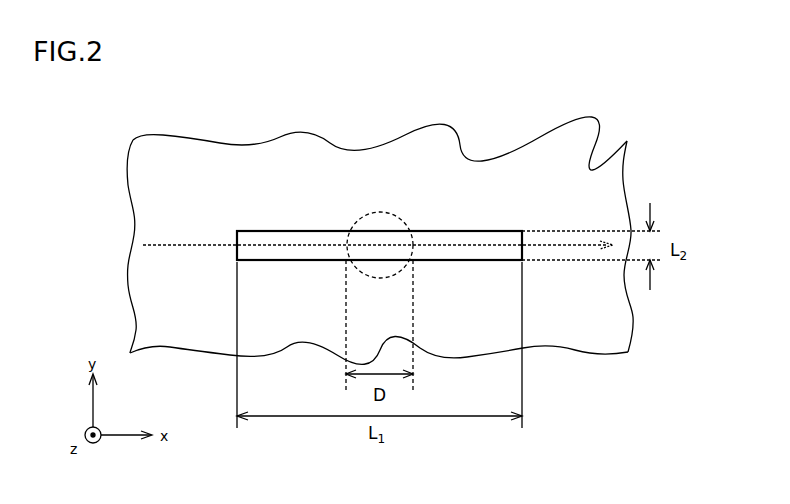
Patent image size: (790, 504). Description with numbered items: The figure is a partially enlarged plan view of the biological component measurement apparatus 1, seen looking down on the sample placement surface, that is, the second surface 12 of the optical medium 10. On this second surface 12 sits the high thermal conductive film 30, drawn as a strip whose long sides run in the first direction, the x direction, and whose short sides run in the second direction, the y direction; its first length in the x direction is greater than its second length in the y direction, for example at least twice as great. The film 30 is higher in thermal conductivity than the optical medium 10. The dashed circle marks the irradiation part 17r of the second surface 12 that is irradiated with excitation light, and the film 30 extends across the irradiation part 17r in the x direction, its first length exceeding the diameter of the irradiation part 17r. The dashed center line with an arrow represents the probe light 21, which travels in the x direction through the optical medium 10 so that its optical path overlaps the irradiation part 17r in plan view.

The biological component measurement apparatus 1 is at (641, 116).
The optical medium 10 is at (170, 348).
The second surface 12 is at (585, 326).
The probe light 21 is at (182, 244).
The high thermal conductive film 30 is at (463, 230).
The irradiation part 17r is at (372, 212).